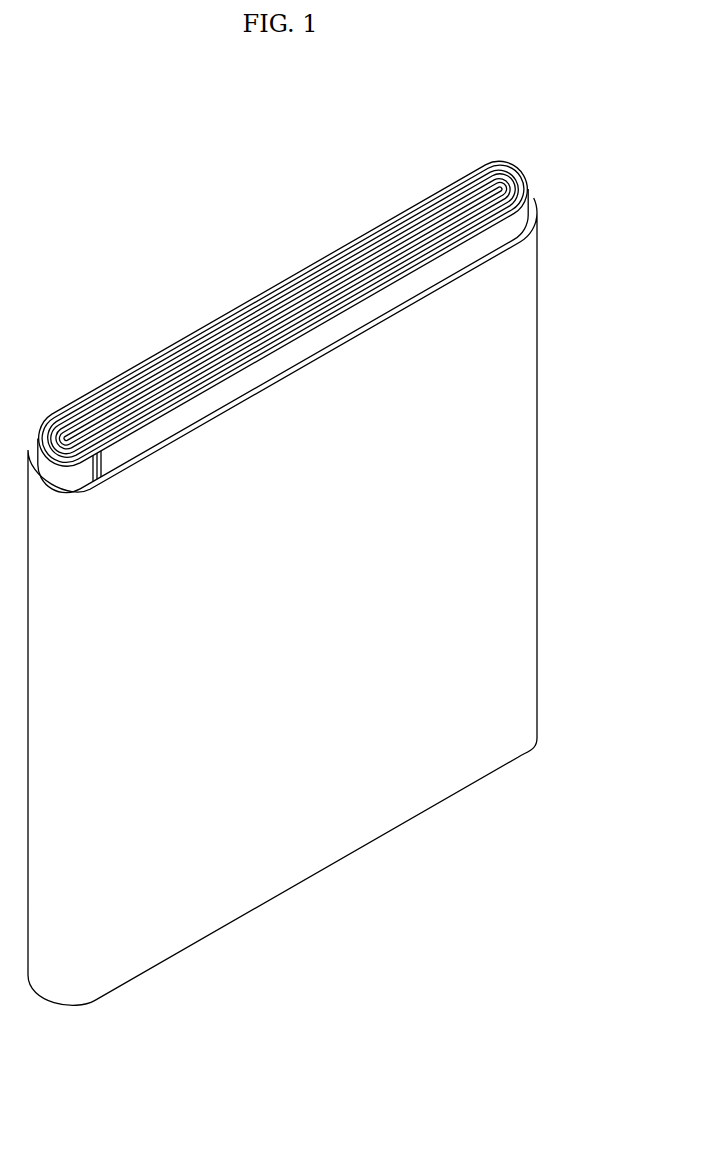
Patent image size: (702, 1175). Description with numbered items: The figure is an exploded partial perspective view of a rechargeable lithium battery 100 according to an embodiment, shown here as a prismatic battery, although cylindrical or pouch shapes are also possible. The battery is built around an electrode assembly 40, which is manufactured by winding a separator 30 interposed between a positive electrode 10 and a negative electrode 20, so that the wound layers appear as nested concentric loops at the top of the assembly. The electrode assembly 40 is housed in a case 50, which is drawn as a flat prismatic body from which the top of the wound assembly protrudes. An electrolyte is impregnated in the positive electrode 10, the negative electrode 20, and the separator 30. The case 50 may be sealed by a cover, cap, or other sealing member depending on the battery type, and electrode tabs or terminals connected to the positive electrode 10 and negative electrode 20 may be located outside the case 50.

The rechargeable lithium battery 100 is at (289, 95).
The positive electrode 10 is at (529, 190).
The negative electrode 20 is at (490, 187).
The separator 30 is at (514, 180).
The electrode assembly 40 is at (248, 266).
The case 50 is at (525, 464).